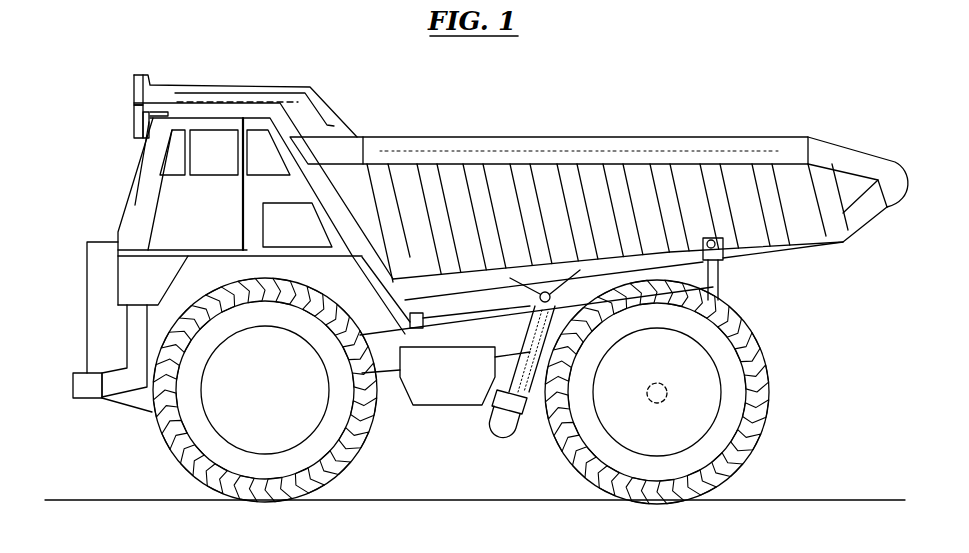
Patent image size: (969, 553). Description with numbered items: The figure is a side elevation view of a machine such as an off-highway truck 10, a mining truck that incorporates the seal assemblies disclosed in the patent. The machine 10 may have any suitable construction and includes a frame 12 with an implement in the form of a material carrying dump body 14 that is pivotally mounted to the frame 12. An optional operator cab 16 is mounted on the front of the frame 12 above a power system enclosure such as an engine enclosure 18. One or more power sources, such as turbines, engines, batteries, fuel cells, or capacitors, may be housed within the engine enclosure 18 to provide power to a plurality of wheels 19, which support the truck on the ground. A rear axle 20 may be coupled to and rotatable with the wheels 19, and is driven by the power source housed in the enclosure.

The off-highway truck 10 is at (641, 91).
The frame 12 is at (384, 363).
The material carrying dump body 14 is at (520, 148).
The operator cab 16 is at (193, 197).
The engine enclosure 18 is at (112, 287).
The wheels 19 is at (171, 439).
The rear axle 20 is at (664, 397).